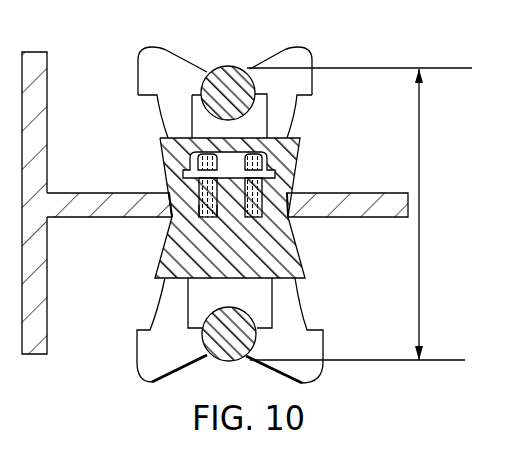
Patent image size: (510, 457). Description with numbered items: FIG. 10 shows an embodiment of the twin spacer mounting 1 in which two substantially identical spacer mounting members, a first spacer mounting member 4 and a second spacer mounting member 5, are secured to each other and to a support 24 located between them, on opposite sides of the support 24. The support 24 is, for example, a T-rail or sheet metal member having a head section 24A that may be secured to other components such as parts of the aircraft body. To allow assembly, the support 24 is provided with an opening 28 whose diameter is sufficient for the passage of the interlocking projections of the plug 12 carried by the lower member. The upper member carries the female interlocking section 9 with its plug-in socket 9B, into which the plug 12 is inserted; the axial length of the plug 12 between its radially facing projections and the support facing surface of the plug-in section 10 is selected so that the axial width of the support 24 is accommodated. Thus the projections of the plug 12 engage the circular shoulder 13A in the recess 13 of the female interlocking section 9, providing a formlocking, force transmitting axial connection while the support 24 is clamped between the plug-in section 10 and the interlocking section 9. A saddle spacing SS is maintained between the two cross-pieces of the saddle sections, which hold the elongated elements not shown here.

The twin spacer mounting 1 is at (326, 45).
The first spacer mounting member 4 is at (148, 65).
The second spacer mounting member 5 is at (148, 359).
The interlocking section 9 is at (306, 137).
The female plug-in socket 9B is at (172, 197).
The plug-in section 10 is at (306, 266).
The male plug 12 is at (266, 183).
The recess 13 is at (281, 148).
The circular shoulder 13A is at (229, 163).
The support 24 is at (388, 202).
The head section 24A is at (47, 255).
The opening 28 is at (195, 203).
The saddle spacing SS is at (359, 214).